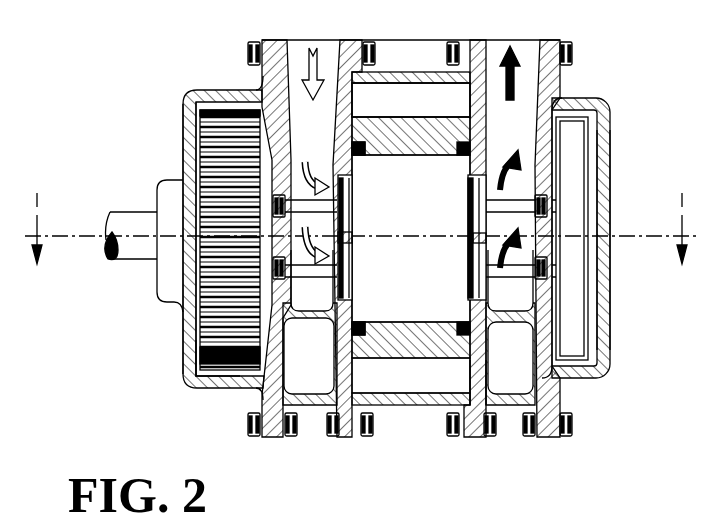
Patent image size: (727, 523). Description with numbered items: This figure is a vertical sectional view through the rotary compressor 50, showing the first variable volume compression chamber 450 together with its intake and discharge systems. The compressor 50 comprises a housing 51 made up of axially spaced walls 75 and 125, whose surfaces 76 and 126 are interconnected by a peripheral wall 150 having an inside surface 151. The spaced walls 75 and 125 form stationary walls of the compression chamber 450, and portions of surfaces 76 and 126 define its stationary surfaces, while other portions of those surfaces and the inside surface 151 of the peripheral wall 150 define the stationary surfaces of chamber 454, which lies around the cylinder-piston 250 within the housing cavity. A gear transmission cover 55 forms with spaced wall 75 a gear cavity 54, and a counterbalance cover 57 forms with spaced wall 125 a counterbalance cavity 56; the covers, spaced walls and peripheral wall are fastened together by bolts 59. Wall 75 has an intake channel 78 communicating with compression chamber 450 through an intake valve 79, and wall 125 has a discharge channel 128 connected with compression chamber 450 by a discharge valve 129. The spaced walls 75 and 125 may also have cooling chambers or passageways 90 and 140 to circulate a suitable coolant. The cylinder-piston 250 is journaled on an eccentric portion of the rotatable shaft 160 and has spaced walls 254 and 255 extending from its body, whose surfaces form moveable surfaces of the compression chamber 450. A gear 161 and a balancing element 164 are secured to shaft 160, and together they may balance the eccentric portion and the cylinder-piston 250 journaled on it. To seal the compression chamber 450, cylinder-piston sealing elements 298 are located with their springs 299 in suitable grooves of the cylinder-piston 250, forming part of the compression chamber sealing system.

The rotary compressor 50 is at (598, 101).
The housing 51 is at (190, 95).
The gear cavity 54 is at (206, 343).
The gear transmission cover 55 is at (187, 313).
The counterbalance cavity 56 is at (599, 166).
The counterbalance cover 57 is at (611, 187).
The bolts 59 is at (250, 44).
The spaced wall 75 is at (280, 55).
The surface 76 is at (358, 88).
The intake channel 78 is at (300, 134).
The intake valve 79 is at (352, 205).
The cooling chamber 90 is at (285, 366).
The spaced wall 125 is at (541, 65).
The surface 126 is at (481, 376).
The discharge channel 128 is at (497, 138).
The discharge valve 129 is at (468, 211).
The cooling chamber 140 is at (490, 350).
The peripheral wall 150 is at (426, 72).
The inside surface 151 is at (432, 394).
The shaft 160 is at (136, 222).
The gear 161 is at (201, 367).
The balancing element 164 is at (583, 350).
The cylinder-piston 250 is at (420, 360).
The spaced wall 254 is at (416, 140).
The spaced wall 255 is at (400, 346).
The cylinder-piston sealing elements 298 is at (360, 142).
The springs 299 is at (363, 154).
The compression chamber 450 is at (393, 247).
The chamber 454 is at (397, 110).